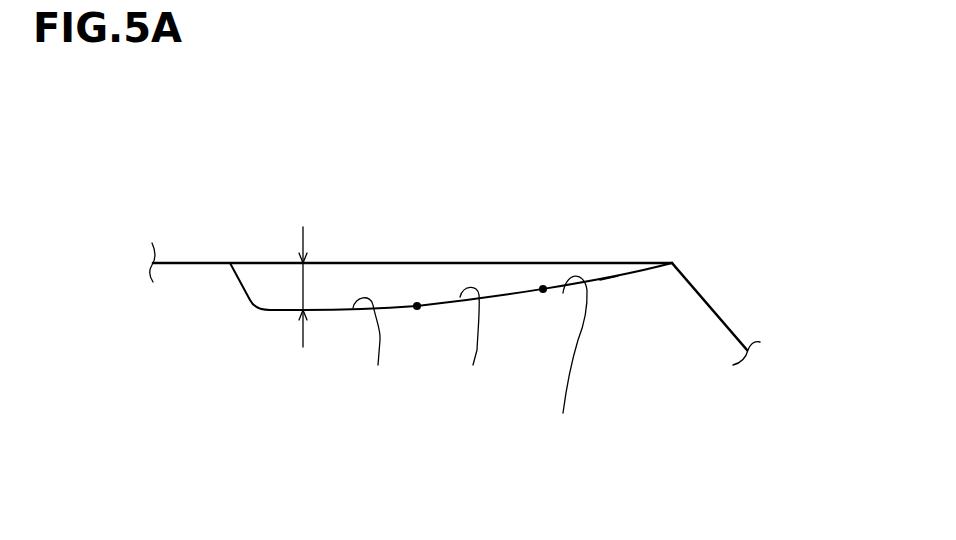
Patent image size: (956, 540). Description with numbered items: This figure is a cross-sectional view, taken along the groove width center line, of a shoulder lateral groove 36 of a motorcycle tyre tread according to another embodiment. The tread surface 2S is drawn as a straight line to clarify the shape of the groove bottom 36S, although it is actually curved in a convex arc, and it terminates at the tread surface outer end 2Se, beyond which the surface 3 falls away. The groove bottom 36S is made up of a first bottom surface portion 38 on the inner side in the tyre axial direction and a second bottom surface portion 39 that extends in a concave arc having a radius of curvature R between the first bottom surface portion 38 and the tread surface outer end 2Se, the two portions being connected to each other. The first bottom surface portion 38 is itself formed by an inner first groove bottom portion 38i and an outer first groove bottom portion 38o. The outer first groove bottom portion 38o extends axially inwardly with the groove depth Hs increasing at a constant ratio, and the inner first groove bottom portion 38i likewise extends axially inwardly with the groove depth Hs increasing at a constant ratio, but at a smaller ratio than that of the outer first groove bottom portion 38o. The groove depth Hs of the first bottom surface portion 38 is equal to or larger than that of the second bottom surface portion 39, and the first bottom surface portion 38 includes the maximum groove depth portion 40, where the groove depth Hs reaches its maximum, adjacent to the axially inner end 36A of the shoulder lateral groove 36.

The tread surface 2S is at (358, 263).
The tread surface outer end 2Se is at (674, 258).
The side surface / rear wall 3 is at (710, 305).
The groove bottom 36S is at (426, 316).
The inner end 36A is at (242, 255).
The shoulder lateral groove 36 is at (392, 287).
The maximum groove depth portion 40 is at (277, 315).
The groove depth Hs is at (303, 285).
The first bottom surface portion 38 is at (449, 364).
The inner first groove bottom portion 38i is at (377, 347).
The outer first groove bottom portion 38o is at (471, 341).
The second bottom surface portion 39 is at (567, 360).
The radius of curvature R is at (609, 278).